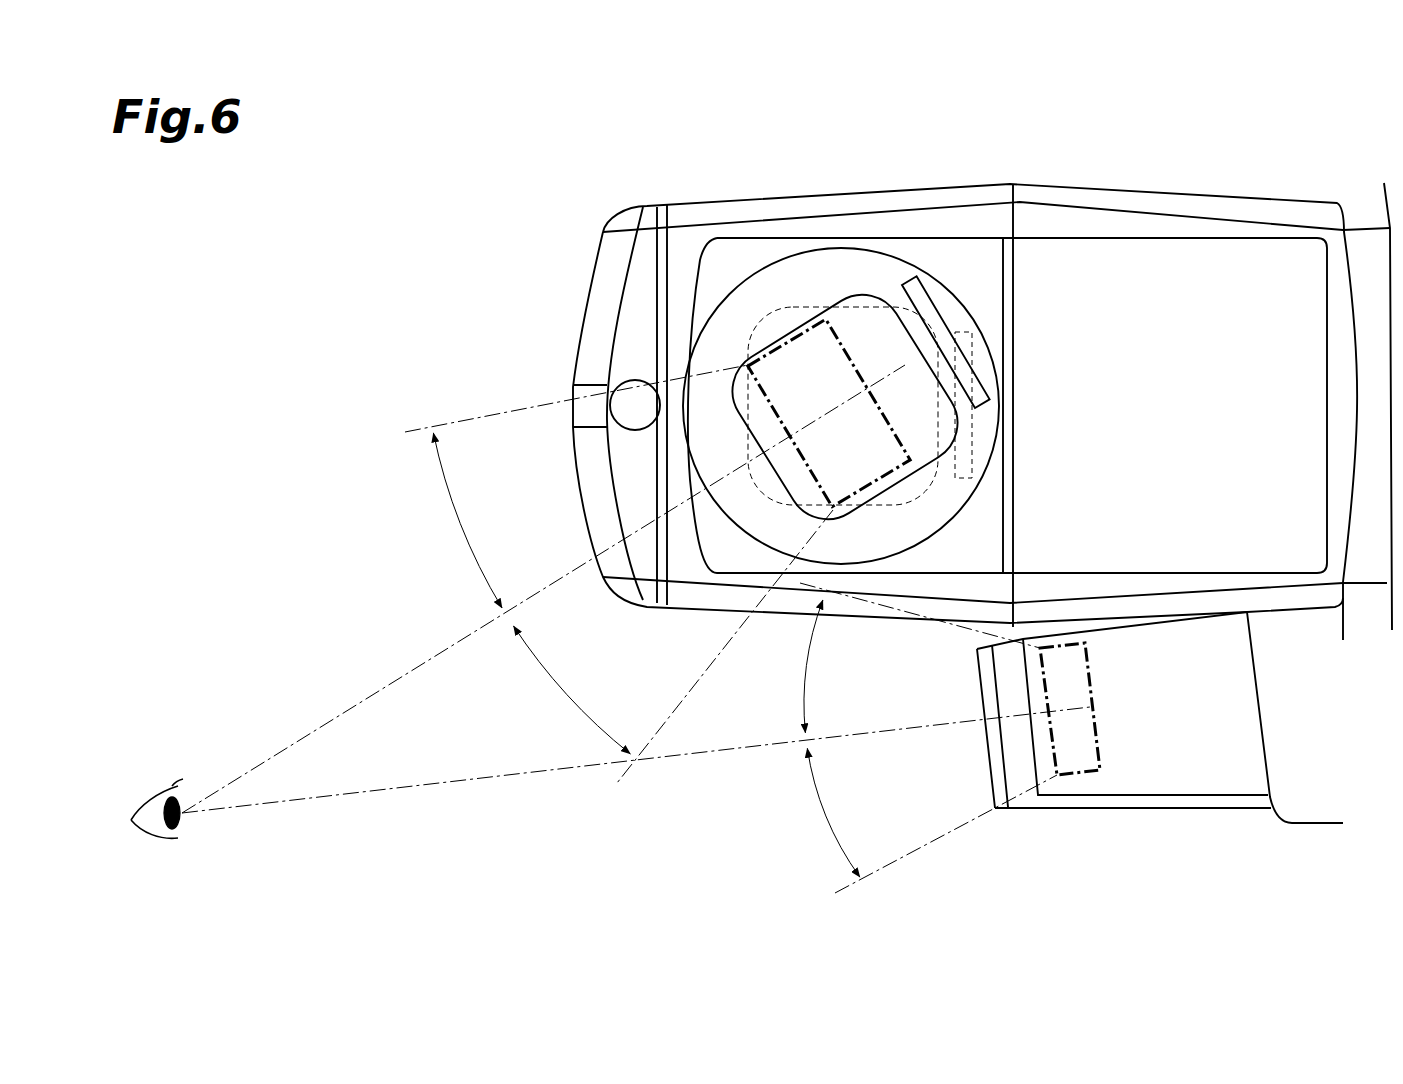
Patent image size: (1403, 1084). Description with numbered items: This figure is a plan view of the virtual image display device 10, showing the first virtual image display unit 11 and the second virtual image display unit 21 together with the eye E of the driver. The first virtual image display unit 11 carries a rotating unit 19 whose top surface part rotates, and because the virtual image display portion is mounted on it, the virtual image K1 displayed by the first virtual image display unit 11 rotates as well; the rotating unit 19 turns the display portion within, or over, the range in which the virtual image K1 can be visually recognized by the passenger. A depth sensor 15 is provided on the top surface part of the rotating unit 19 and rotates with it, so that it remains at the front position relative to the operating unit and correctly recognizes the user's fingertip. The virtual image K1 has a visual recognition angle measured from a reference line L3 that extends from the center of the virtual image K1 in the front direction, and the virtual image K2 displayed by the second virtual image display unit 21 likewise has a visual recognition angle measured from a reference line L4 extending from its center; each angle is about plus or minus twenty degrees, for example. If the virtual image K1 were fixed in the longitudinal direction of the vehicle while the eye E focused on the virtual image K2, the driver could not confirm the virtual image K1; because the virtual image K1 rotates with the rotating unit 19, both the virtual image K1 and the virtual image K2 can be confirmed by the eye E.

The imaging device 10 is at (1268, 162).
The first virtual image display unit 11 is at (889, 181).
The depth sensor 15 is at (915, 300).
The rotating unit 19 is at (908, 274).
The second virtual image display unit 21 is at (1191, 802).
The virtual image K1 is at (850, 348).
The virtual image K2 is at (1082, 775).
The eye E is at (186, 824).
The reference line L3 is at (368, 695).
The reference line L4 is at (690, 757).